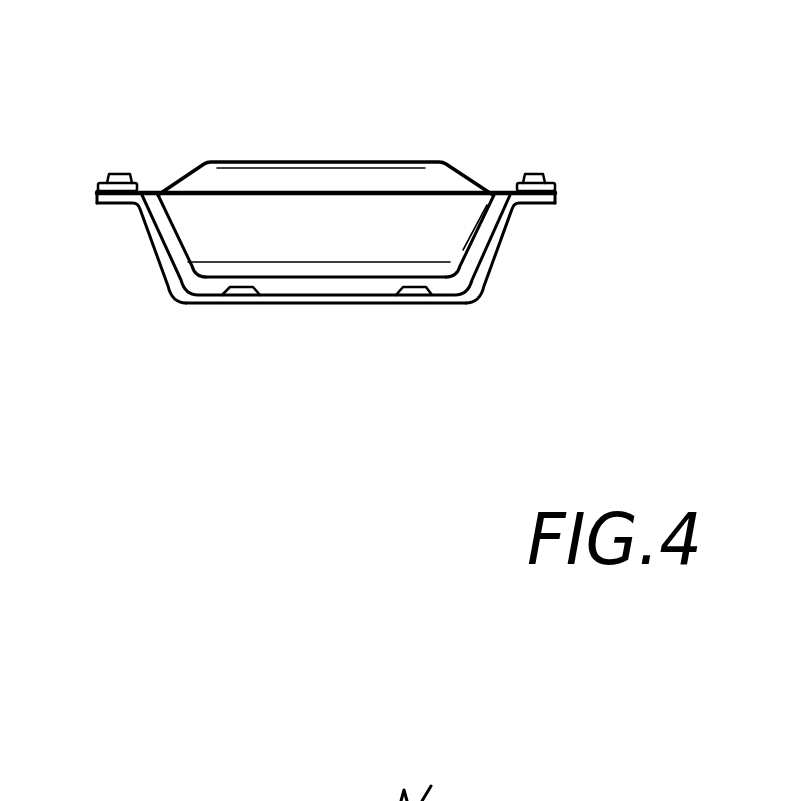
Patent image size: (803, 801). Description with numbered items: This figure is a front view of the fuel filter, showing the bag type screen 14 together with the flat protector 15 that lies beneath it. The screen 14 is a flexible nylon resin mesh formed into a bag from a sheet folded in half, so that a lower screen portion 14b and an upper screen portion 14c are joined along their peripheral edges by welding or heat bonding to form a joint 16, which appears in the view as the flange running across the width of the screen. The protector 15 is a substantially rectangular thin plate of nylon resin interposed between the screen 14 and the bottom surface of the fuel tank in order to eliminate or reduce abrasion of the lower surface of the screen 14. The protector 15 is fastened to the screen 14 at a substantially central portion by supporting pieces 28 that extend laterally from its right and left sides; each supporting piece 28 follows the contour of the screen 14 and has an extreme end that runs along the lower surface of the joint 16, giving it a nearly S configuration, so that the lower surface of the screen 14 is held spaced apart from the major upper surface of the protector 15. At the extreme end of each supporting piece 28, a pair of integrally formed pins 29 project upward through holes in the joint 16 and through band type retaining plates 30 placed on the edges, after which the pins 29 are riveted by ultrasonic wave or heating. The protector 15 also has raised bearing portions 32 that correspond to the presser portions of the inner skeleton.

The screen 14 is at (404, 178).
The lower screen portion 14b is at (358, 248).
The upper screen portion 14c is at (350, 172).
The protector 15 is at (333, 304).
The joint 16 is at (272, 192).
The supporting pieces 28 is at (147, 237).
The pins 29 is at (120, 182).
The retaining plates 30 is at (95, 182).
The raised bearing portions 32 is at (240, 293).